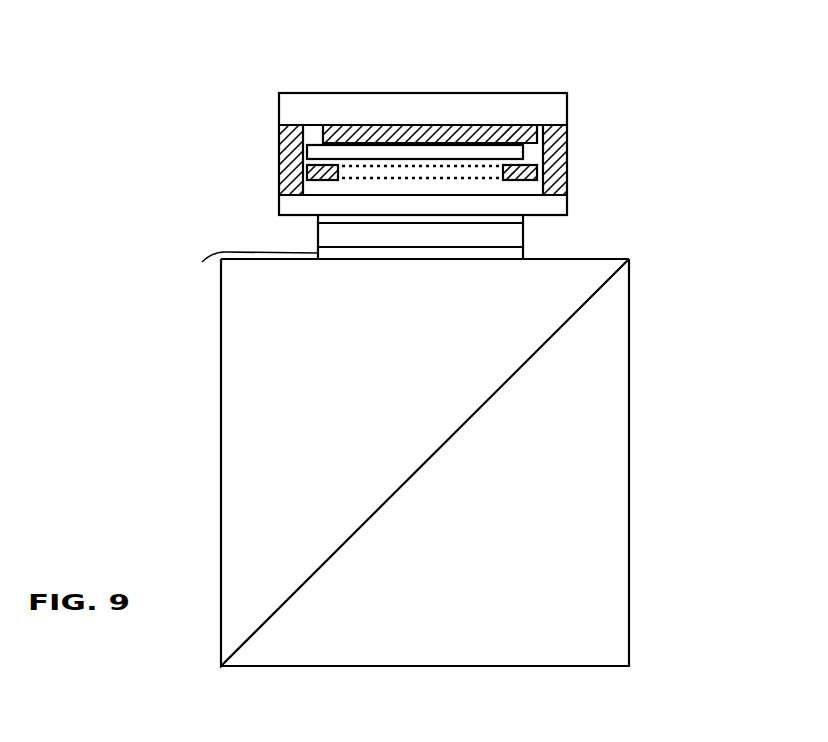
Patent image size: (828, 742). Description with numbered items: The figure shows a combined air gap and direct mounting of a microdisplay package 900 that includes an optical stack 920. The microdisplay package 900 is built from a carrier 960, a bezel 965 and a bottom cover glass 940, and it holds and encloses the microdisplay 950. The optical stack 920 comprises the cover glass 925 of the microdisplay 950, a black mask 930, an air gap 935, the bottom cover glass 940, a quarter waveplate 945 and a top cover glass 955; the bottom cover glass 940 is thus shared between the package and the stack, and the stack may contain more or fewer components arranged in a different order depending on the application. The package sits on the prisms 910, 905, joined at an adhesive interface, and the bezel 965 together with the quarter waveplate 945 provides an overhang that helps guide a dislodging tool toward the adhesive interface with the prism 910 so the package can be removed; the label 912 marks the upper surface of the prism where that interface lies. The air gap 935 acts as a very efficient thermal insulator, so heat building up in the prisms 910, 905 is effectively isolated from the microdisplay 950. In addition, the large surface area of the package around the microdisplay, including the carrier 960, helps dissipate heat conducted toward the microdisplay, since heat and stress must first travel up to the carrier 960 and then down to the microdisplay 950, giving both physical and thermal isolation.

The microdisplay package 900 is at (516, 68).
The prism 905 is at (568, 637).
The prism 910 is at (273, 567).
The top surface of base 912 is at (300, 262).
The optical stack 920 is at (657, 153).
The cover glass 925 is at (507, 153).
The black mask 930 is at (522, 183).
The air gap 935 is at (415, 183).
The bottom cover glass 940 is at (279, 197).
The quarter waveplate 945 is at (318, 220).
The microdisplay 950 is at (522, 127).
The top cover glass 955 is at (318, 238).
The carrier 960 is at (279, 98).
The bezel 965 is at (279, 132).